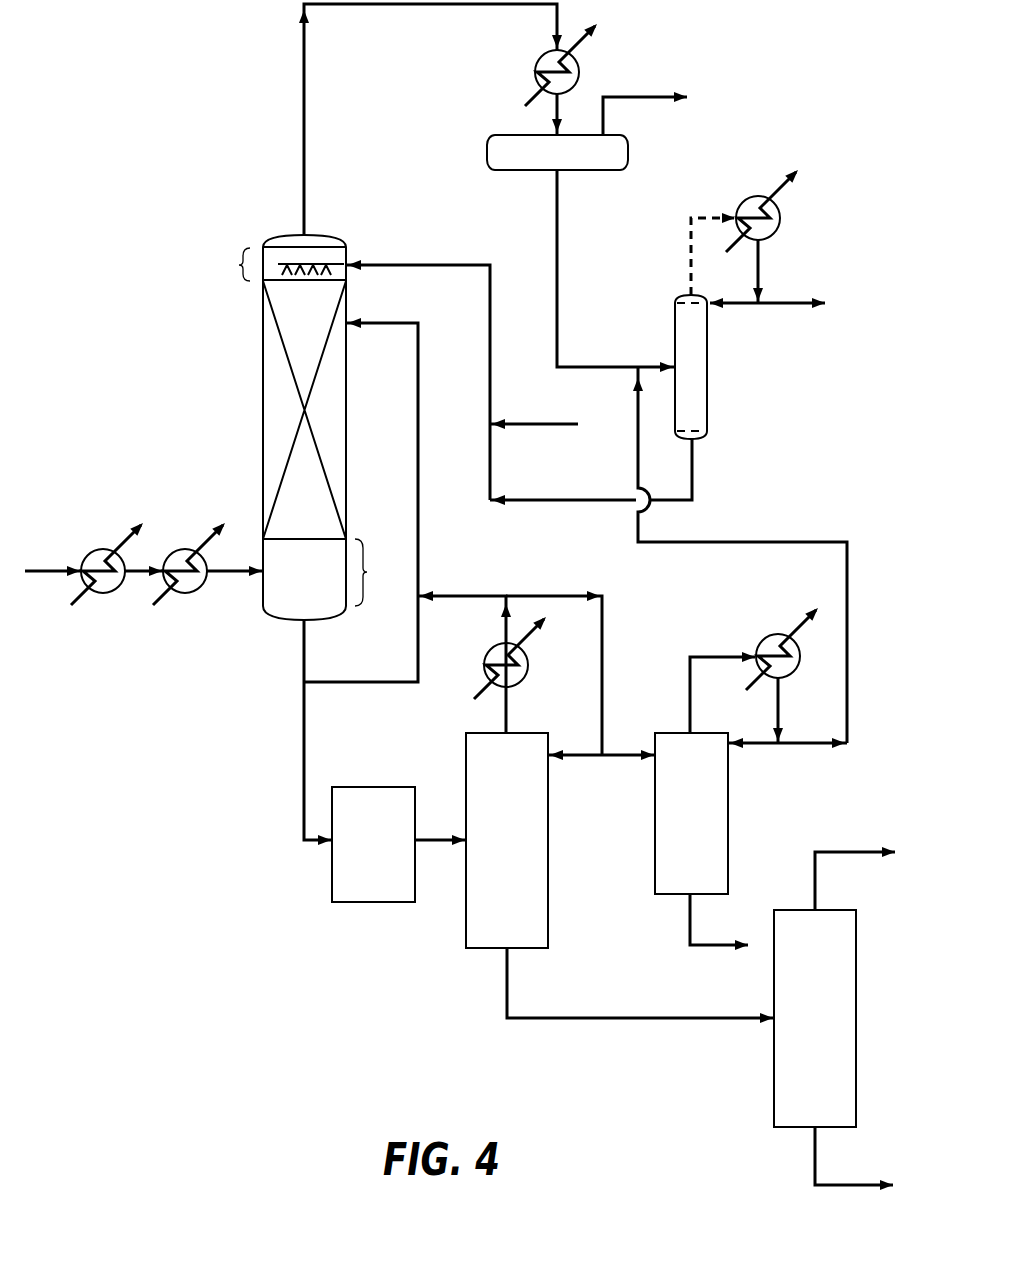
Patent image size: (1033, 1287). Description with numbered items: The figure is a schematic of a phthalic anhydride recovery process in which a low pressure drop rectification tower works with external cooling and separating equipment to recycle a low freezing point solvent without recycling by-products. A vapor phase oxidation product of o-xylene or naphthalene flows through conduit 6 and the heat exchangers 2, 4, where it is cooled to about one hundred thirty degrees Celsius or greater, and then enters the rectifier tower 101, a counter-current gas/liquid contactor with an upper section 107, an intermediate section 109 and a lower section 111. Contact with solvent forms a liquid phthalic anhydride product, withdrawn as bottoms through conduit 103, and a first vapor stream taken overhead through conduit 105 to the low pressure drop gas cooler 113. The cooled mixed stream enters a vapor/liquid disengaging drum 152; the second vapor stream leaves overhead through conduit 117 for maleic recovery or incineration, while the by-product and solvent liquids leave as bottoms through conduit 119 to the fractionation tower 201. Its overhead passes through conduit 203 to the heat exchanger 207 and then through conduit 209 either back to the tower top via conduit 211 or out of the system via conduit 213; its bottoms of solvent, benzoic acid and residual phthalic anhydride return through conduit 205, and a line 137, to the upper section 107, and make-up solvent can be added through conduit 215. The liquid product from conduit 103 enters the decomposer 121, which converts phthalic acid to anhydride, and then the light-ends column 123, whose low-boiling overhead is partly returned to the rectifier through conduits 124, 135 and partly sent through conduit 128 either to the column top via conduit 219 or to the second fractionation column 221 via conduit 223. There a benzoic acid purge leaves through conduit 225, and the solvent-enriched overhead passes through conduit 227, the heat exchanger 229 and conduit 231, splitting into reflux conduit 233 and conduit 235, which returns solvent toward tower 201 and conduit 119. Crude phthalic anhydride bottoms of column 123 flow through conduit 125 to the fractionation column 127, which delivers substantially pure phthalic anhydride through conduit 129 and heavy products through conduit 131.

The heat exchanger 2 is at (96, 548).
The heat exchanger 4 is at (182, 548).
The conduit 6 is at (40, 568).
The rectifier tower 101 is at (262, 362).
The conduit 103 is at (302, 648).
The conduit 105 is at (302, 143).
The upper section 107 is at (277, 264).
The intermediate section 109 is at (321, 313).
The lower section 111 is at (380, 572).
The low pressure drop gas cooler 113 is at (543, 52).
The conduit 117 is at (626, 97).
The conduit 119 is at (556, 203).
The decomposer 121 is at (368, 787).
The light-ends column 123 is at (532, 733).
The conduit 124 is at (483, 594).
The conduit 125 is at (506, 988).
The fractionation column 127 is at (801, 909).
The conduit 128 is at (549, 594).
The conduit 129 is at (858, 851).
The conduit 131 is at (860, 1186).
The conduit 135 is at (420, 395).
The reflux line 137 is at (340, 272).
The reflux drum 152 is at (510, 135).
The fractionation tower 201 is at (674, 320).
The conduit 203 is at (690, 262).
The conduit 205 is at (693, 469).
The heat exchanger 207 is at (757, 195).
The conduit 209 is at (762, 277).
The conduit 211 is at (742, 306).
The conduit 213 is at (797, 306).
The conduit 215 is at (532, 423).
The conduit 219 is at (578, 757).
The second fractionation column 221 is at (654, 862).
The conduit 223 is at (626, 757).
The conduit 225 is at (708, 946).
The conduit 227 is at (688, 702).
The heat exchanger 229 is at (770, 634).
The conduit 231 is at (780, 714).
The conduit 233 is at (762, 745).
The conduit 235 is at (820, 745).